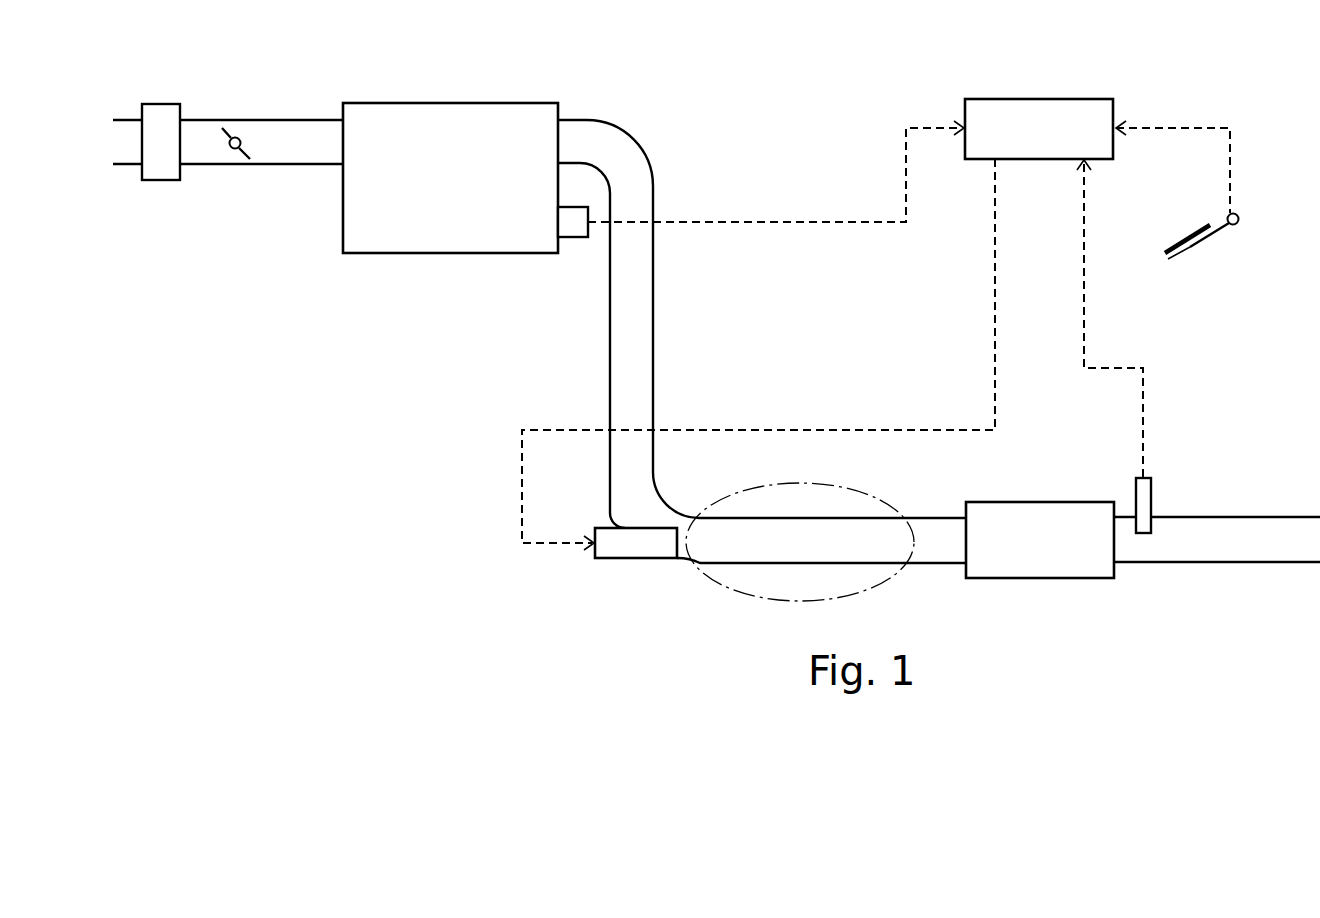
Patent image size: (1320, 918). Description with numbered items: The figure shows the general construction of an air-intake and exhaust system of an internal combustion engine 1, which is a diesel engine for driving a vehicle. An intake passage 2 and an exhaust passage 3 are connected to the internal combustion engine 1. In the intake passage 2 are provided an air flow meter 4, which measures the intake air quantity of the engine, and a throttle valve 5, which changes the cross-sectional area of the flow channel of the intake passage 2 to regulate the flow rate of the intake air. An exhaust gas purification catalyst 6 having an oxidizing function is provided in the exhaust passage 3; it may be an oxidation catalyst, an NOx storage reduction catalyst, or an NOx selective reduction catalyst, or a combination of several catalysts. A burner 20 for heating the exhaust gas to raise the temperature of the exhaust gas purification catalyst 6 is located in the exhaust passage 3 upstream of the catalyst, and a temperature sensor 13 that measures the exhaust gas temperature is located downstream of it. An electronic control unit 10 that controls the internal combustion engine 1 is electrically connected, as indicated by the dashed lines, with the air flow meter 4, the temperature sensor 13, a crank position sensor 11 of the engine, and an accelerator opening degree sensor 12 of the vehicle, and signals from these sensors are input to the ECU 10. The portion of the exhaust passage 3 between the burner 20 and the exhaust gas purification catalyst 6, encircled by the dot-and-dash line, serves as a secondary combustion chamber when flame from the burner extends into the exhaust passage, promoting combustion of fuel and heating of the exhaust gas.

The internal combustion engine 1 is at (462, 255).
The intake passage 2 is at (298, 165).
The exhaust passage 3 is at (655, 310).
The air flow meter 4 is at (165, 181).
The throttle valve 5 is at (231, 152).
The exhaust gas purification catalyst 6 is at (1028, 502).
The electronic control unit (ECU) 10 is at (1046, 98).
The crank position sensor 11 is at (571, 239).
The accelerator opening degree sensor 12 is at (1233, 226).
The temperature sensor 13 is at (1152, 495).
The burner 20 is at (626, 560).